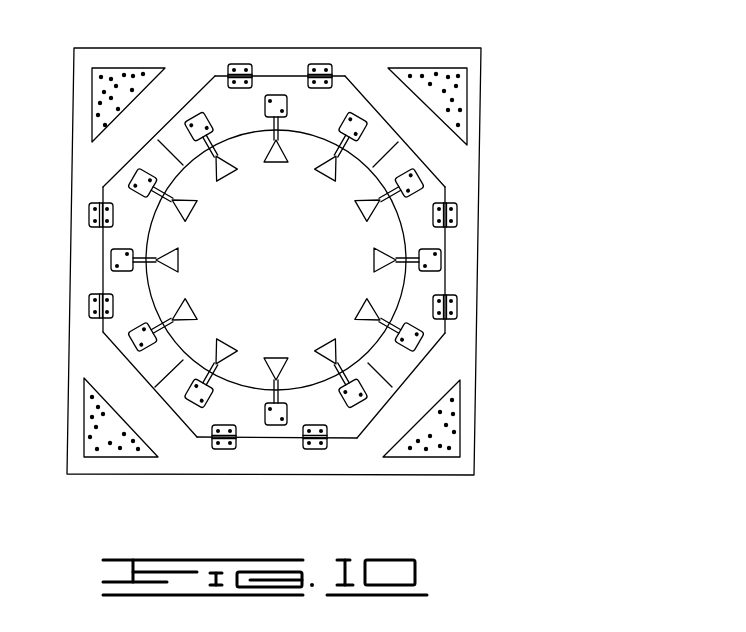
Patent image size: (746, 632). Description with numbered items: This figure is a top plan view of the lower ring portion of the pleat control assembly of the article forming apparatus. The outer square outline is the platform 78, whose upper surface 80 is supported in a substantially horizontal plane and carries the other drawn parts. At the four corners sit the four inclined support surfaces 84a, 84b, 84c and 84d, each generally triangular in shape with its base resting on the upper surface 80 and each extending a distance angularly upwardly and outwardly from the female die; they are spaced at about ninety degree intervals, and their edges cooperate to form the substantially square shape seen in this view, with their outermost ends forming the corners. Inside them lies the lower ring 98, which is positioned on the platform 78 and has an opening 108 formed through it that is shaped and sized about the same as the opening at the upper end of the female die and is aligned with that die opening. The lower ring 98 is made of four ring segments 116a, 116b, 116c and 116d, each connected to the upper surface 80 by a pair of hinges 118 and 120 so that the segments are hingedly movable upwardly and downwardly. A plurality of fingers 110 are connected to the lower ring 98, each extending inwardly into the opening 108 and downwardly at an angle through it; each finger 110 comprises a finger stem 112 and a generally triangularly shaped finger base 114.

The platform 78 is at (488, 108).
The upper surface 80 is at (470, 164).
The inclined support surface 84a is at (121, 90).
The inclined support surface 84b is at (436, 92).
The inclined support surface 84c is at (435, 432).
The inclined support surface 84d is at (110, 432).
The lower ring 98 is at (427, 287).
The opening 108 is at (312, 388).
The finger 110 is at (181, 258).
The finger stem 112 is at (147, 255).
The finger base 114 is at (172, 272).
The ring segment 116a is at (260, 90).
The ring segment 116b is at (430, 245).
The ring segment 116c is at (293, 425).
The ring segment 116d is at (112, 242).
The hinge 118 is at (322, 63).
The hinge 120 is at (240, 63).